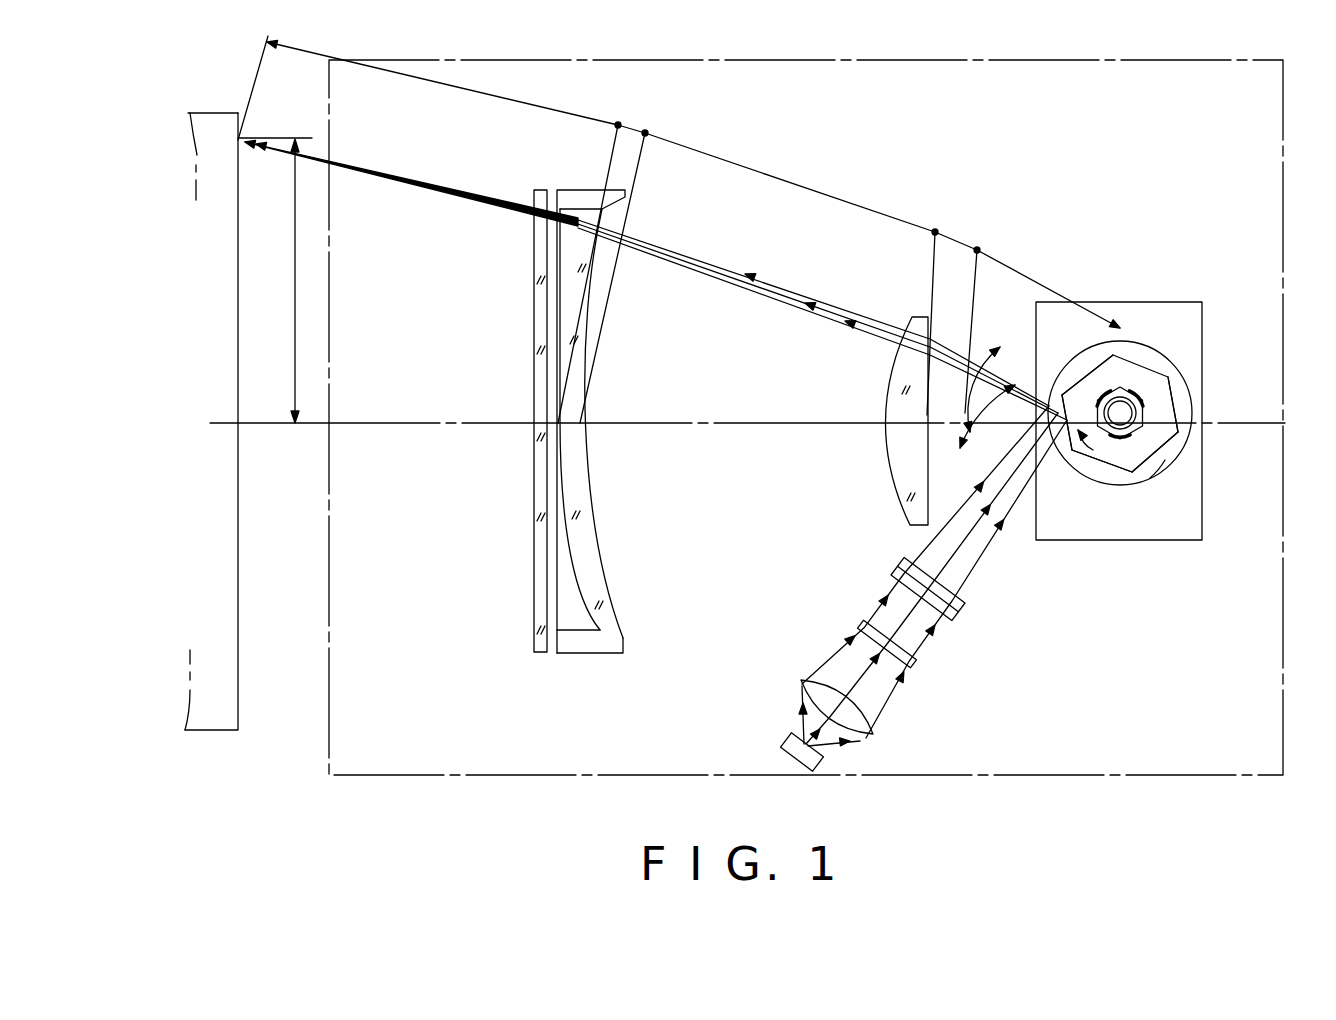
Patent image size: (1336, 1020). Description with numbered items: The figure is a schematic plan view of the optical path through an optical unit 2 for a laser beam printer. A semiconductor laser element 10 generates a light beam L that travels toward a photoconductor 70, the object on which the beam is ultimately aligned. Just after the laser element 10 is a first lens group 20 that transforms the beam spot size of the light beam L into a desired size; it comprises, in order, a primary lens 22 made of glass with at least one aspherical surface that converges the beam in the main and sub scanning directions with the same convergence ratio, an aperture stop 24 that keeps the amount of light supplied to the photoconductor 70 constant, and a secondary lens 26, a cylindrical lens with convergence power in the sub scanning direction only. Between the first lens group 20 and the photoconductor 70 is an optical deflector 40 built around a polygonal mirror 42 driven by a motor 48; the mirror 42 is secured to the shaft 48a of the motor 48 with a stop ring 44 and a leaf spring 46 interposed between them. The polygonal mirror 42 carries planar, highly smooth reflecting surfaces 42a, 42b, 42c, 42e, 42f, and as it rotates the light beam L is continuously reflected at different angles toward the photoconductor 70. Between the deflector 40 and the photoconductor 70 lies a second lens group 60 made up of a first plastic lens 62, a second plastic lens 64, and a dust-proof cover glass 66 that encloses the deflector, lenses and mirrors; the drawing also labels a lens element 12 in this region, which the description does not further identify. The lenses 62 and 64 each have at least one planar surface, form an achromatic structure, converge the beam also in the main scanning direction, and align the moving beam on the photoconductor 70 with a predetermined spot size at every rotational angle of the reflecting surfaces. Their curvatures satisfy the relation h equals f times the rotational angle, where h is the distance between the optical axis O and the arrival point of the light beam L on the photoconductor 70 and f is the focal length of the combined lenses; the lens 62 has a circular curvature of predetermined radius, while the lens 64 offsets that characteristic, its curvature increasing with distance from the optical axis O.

The optical unit 2 is at (1286, 132).
The semiconductor laser element 10 is at (785, 735).
The scanning lens 12 is at (583, 363).
The first lens group 20 is at (905, 532).
The primary lens 22 is at (880, 738).
The aperture stop 24 is at (918, 665).
The secondary lens 26 is at (966, 608).
The optical deflector 40 is at (1100, 302).
The polygonal mirror 42 is at (1125, 395).
The reflecting surface 42a is at (1090, 462).
The reflecting surface 42b is at (1170, 460).
The reflecting surface 42c is at (1180, 403).
The reflecting surface 42e is at (1083, 375).
The reflecting surface 42f is at (1040, 485).
The stop ring 44 is at (1124, 396).
The leaf spring 46 is at (1116, 440).
The motor 48 is at (1188, 375).
The shaft 48a is at (1158, 462).
The second lens group 60 is at (960, 156).
The first plastic lens 62 is at (922, 312).
The second plastic lens 64 is at (612, 655).
The dust-proof cover glass 66 is at (540, 655).
The photoconductor 70 is at (236, 667).
The light beam L is at (778, 287).
The beam arrival point h is at (275, 280).
The focal length f is at (693, 184).
The optical axis O is at (352, 418).